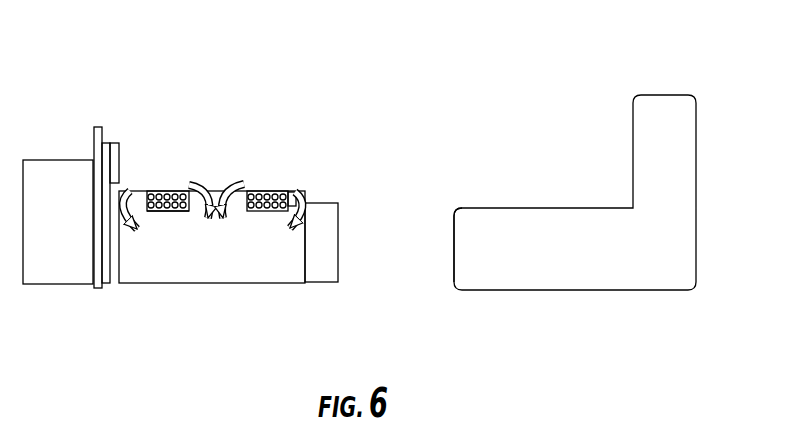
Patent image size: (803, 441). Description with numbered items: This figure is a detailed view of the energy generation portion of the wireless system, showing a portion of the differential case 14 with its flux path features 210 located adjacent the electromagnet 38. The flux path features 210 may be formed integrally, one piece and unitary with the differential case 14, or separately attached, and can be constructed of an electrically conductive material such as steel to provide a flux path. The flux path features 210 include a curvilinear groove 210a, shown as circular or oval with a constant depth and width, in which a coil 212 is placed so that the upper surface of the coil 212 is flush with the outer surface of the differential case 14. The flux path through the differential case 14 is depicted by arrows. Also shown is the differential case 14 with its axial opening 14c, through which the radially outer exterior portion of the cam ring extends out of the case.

The differential case 14 is at (227, 258).
The axial opening 14c is at (446, 293).
The electromagnet 38 is at (61, 156).
The flux path features 210 is at (220, 190).
The curvilinear groove 210a is at (178, 213).
The coil 212 is at (181, 190).